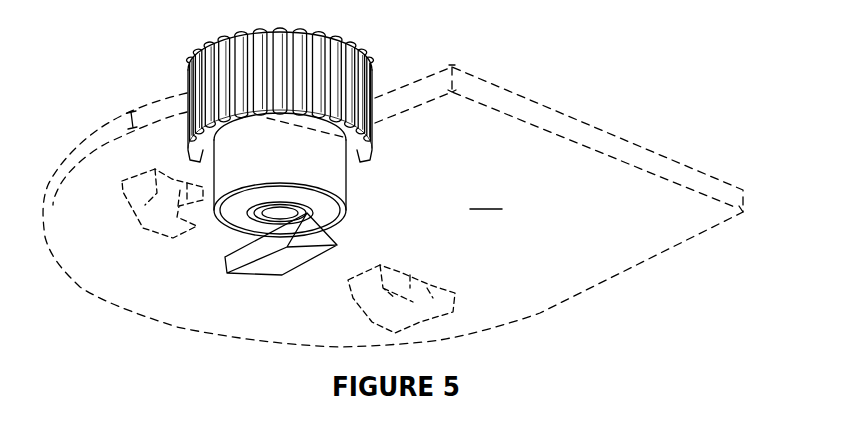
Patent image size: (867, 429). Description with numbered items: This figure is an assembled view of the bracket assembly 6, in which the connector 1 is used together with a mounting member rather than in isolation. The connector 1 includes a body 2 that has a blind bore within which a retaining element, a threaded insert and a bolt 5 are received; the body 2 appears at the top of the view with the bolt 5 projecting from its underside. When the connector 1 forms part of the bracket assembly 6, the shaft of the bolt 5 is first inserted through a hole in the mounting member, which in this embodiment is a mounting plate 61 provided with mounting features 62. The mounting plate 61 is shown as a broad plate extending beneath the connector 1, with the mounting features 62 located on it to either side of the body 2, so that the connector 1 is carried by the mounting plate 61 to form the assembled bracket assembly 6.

The connector 1 is at (161, 44).
The body 2 is at (342, 42).
The bolt 5 is at (272, 268).
The bracket assembly 6 is at (704, 44).
The mounting plate 61 is at (486, 196).
The mounting features 62 is at (173, 233).